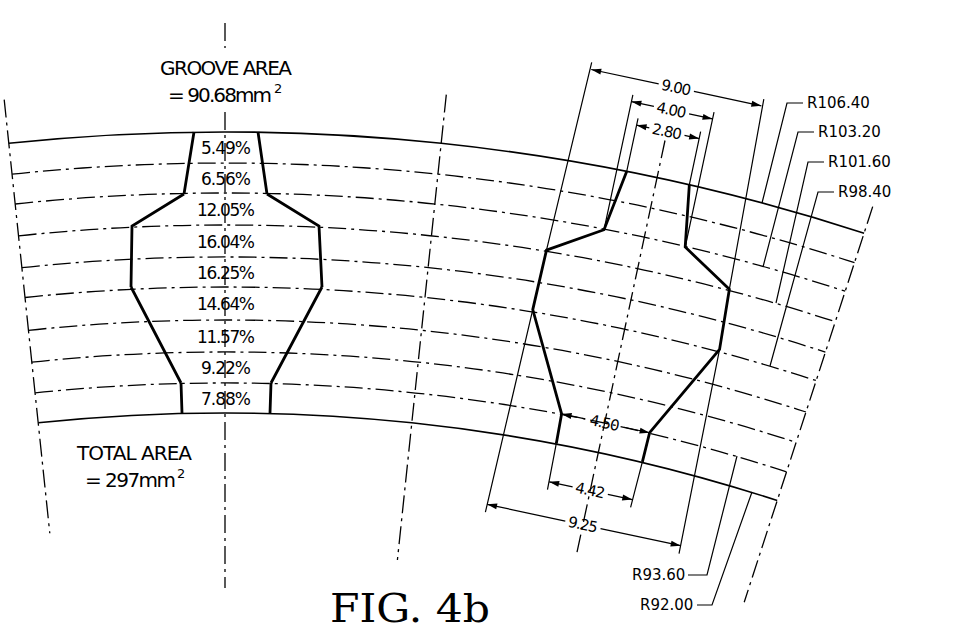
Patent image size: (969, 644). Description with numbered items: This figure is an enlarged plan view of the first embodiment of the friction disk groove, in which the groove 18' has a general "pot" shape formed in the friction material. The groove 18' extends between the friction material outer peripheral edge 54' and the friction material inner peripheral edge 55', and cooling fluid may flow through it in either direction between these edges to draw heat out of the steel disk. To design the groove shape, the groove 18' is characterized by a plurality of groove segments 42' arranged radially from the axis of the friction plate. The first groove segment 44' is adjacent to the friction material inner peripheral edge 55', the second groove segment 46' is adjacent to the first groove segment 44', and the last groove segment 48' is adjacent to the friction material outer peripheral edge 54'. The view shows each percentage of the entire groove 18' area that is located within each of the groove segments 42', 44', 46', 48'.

The groove 18' is at (438, 312).
The friction material outer peripheral edge 54' is at (436, 159).
The friction material inner peripheral edge 55' is at (407, 467).
The last groove segment 48' is at (182, 163).
The groove segment 42' is at (194, 240).
The second groove segment 46' is at (197, 335).
The first groove segment 44' is at (179, 398).